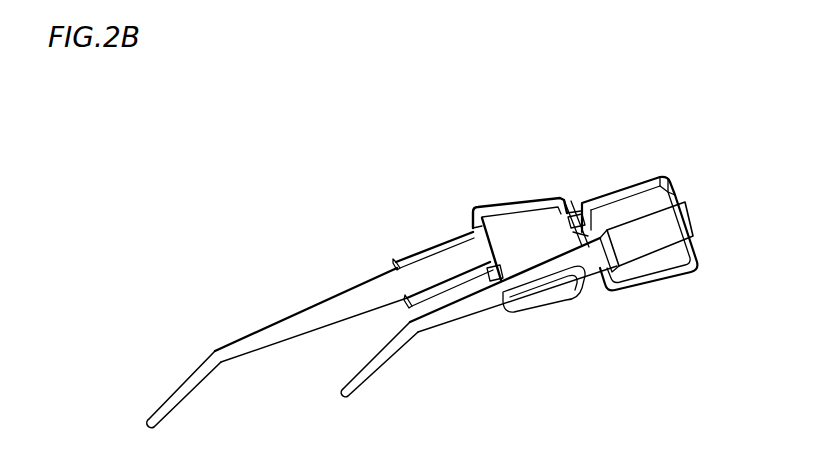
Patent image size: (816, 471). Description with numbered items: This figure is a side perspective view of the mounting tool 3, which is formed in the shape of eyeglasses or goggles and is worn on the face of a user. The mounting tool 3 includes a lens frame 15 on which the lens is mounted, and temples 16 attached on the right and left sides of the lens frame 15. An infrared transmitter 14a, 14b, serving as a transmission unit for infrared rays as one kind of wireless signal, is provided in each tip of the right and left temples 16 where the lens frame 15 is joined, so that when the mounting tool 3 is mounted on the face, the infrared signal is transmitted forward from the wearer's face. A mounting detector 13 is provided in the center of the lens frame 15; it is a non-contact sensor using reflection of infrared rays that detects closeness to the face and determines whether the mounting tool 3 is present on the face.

The mounting tool 3 is at (540, 162).
The mounting detector 13 is at (553, 217).
The infrared transmitter 14a is at (433, 243).
The infrared transmitter 14b is at (641, 247).
The lens frame 15 is at (567, 300).
The temple 16 is at (265, 338).